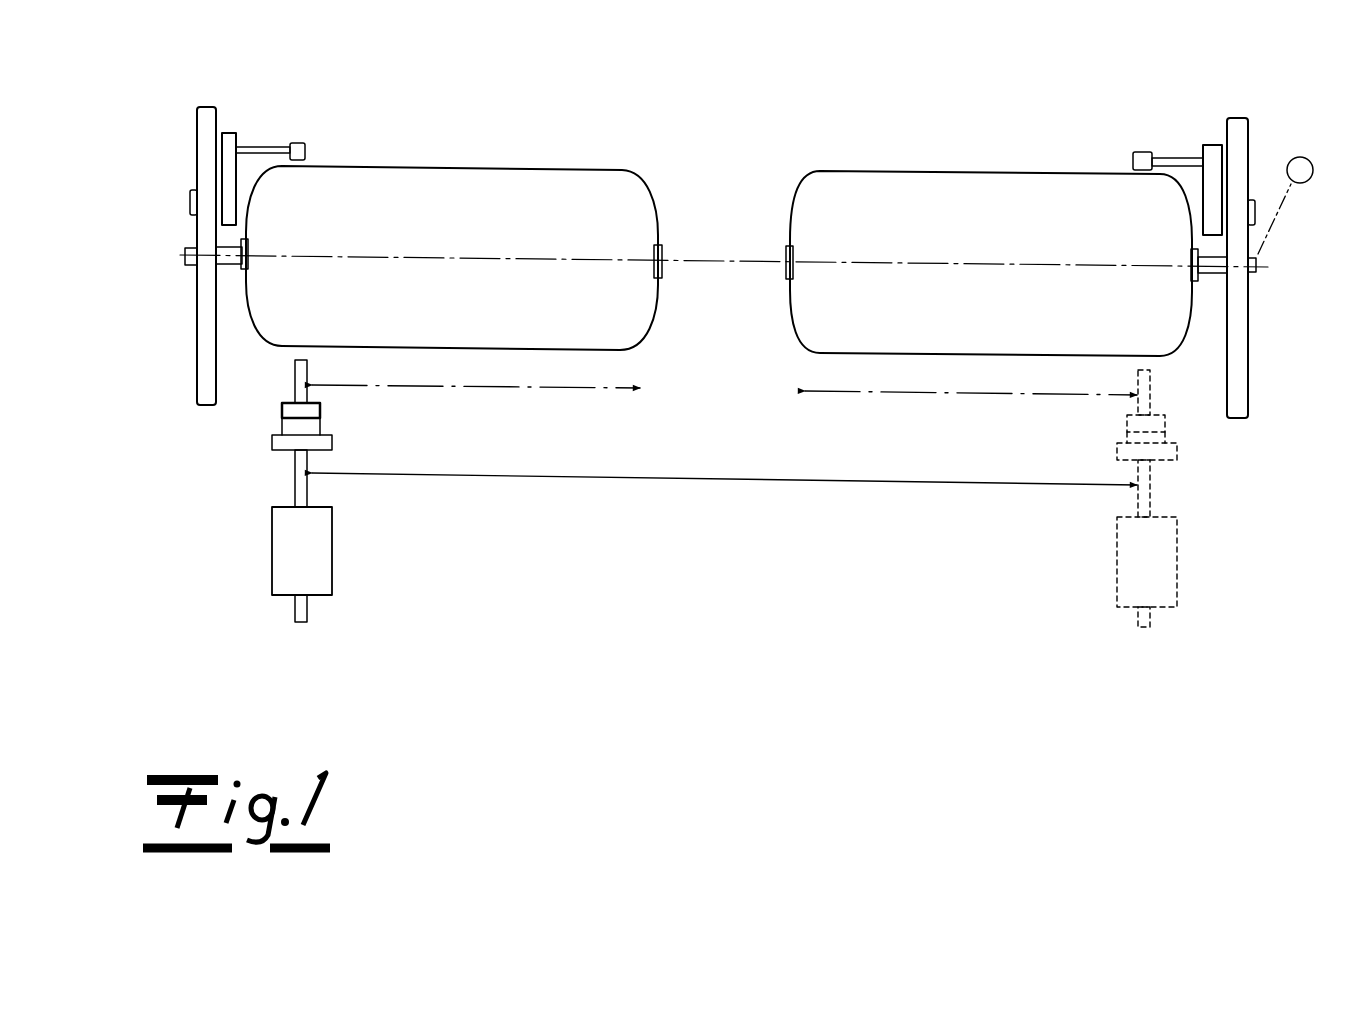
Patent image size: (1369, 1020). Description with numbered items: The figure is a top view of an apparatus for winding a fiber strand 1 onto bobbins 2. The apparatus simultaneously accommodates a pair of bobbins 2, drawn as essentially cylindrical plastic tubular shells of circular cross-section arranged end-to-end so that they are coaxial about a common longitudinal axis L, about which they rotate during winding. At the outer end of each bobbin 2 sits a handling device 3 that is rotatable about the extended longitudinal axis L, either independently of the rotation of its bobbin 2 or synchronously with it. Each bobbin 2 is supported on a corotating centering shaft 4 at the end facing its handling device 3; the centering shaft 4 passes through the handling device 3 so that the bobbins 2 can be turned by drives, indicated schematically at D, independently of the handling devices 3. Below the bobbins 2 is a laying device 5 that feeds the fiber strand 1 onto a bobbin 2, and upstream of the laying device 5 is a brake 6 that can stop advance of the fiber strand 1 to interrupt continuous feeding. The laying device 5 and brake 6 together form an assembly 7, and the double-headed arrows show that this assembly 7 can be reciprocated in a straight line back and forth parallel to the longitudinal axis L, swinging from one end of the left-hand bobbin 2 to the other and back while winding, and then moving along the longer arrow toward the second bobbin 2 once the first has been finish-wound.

The fiber strand 1 is at (292, 478).
The bobbins 2 is at (607, 187).
The handling device 3 is at (192, 98).
The centering shaft 4 is at (228, 262).
The laying device 5 is at (265, 433).
The brake 6 is at (265, 555).
The assembly 7 is at (203, 491).
The drives D is at (1310, 162).
The longitudinal axis L is at (1283, 267).